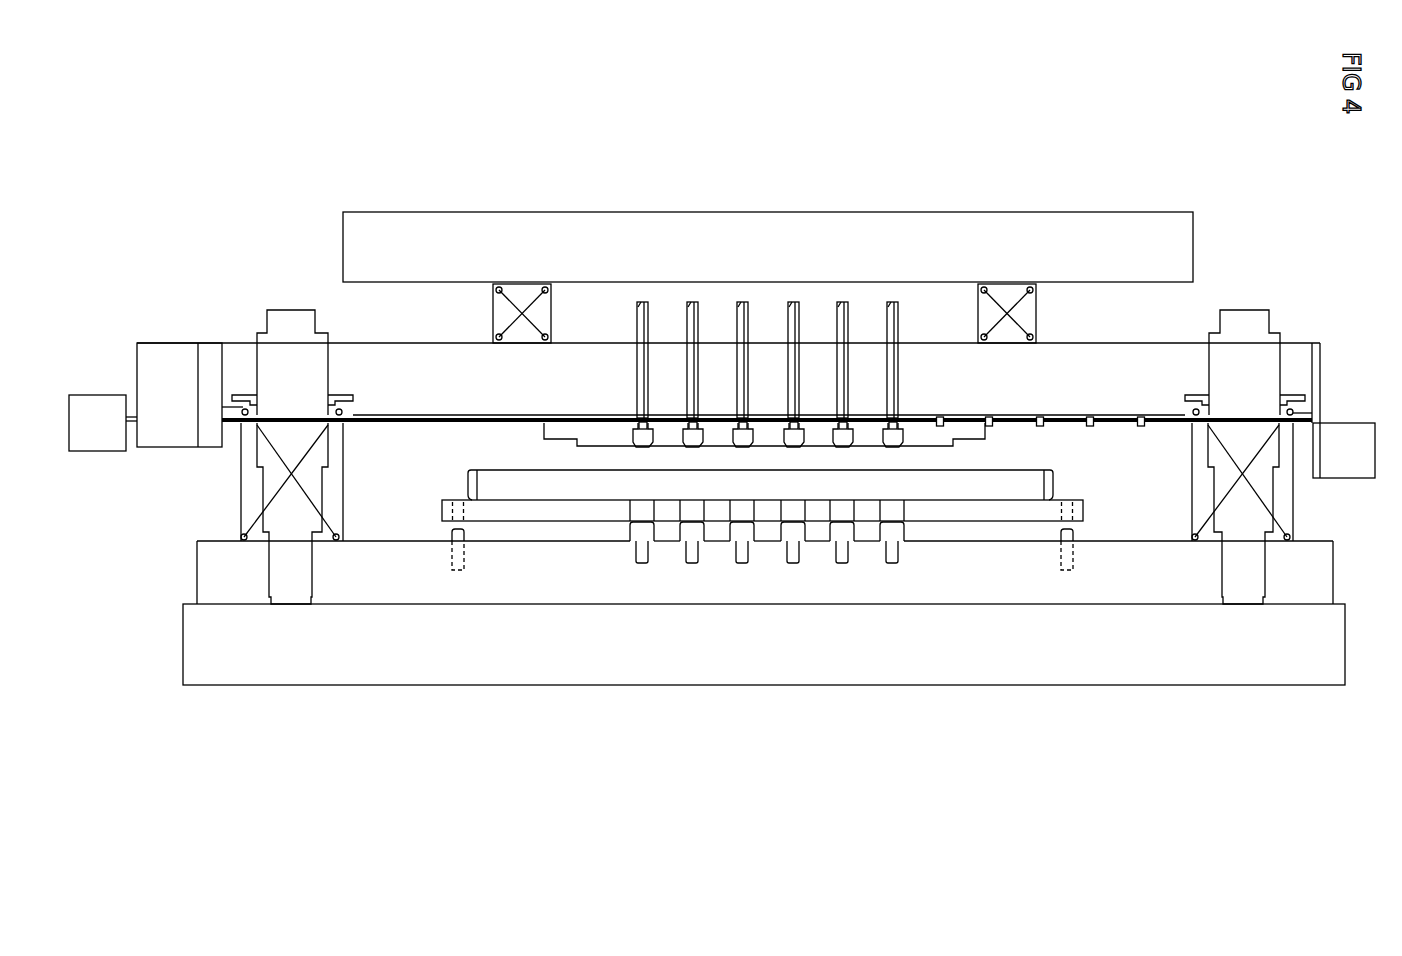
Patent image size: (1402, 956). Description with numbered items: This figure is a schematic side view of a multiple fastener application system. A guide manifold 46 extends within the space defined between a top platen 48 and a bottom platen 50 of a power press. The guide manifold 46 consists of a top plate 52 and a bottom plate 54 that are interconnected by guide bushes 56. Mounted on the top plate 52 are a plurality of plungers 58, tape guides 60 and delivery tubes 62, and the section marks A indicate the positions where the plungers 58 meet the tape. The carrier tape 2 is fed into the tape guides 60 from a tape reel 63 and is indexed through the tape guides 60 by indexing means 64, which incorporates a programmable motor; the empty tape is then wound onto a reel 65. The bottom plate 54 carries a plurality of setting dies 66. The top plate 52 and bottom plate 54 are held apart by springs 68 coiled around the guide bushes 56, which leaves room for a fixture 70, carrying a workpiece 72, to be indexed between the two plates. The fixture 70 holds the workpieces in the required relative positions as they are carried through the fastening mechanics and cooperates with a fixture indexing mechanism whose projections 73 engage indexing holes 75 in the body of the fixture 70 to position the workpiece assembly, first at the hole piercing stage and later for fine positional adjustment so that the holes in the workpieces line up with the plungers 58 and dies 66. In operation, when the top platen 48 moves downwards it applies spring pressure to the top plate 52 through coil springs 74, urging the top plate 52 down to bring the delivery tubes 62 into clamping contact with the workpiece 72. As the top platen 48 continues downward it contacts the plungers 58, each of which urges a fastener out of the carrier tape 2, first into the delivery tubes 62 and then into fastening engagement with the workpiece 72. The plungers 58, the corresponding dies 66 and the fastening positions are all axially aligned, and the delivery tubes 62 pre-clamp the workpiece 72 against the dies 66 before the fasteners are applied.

The carrier tape 2 is at (1072, 420).
The guide manifold 46 is at (1140, 355).
The top platen 48 is at (1165, 240).
The bottom platen 50 is at (1250, 670).
The top plate 52 is at (239, 358).
The bottom plate 54 is at (228, 573).
The guide bushes 56 is at (292, 338).
The plungers 58 is at (641, 303).
The tape guides 60 is at (962, 418).
The delivery tubes 62 is at (640, 447).
The tape reel 63 is at (1358, 445).
The indexing means 64 is at (170, 362).
The reel 65 is at (101, 407).
The setting dies 66 is at (642, 552).
The springs 68 is at (330, 484).
The fixture 70 is at (1090, 498).
The workpiece 72 is at (1010, 487).
The projections 73 is at (458, 538).
The coil springs 74 is at (502, 313).
The indexing holes 75 is at (463, 508).
The section mark A is at (648, 417).